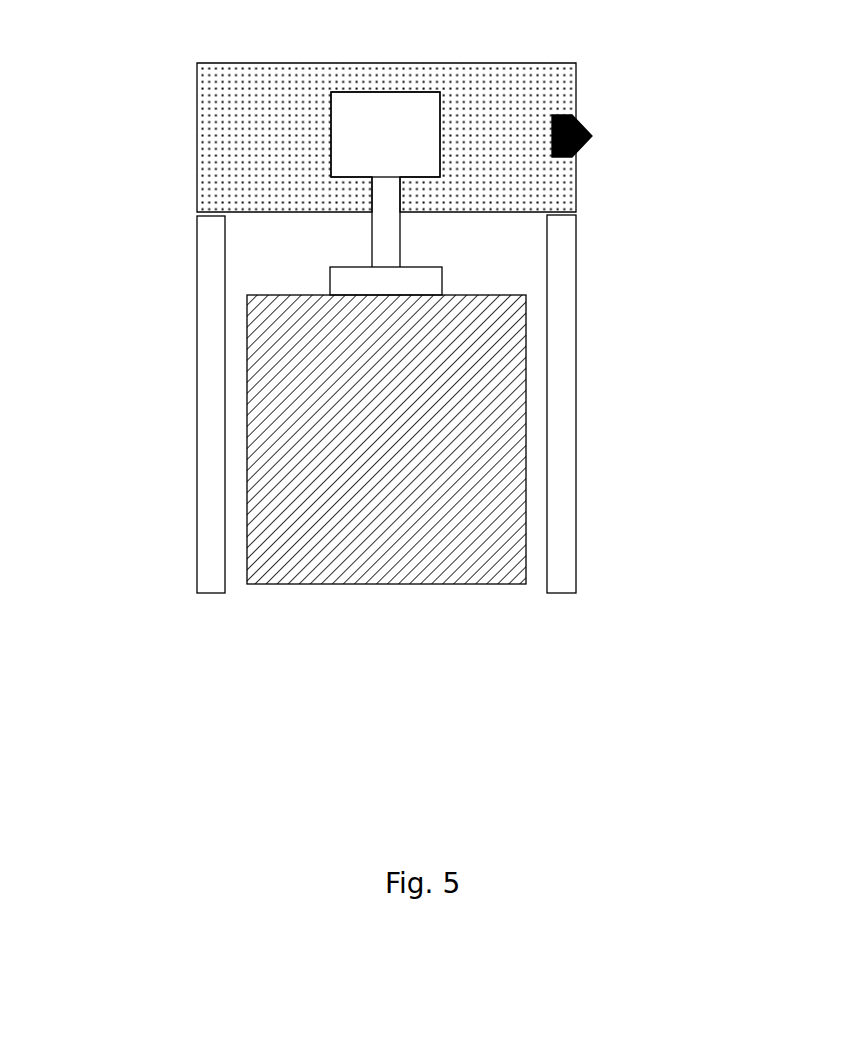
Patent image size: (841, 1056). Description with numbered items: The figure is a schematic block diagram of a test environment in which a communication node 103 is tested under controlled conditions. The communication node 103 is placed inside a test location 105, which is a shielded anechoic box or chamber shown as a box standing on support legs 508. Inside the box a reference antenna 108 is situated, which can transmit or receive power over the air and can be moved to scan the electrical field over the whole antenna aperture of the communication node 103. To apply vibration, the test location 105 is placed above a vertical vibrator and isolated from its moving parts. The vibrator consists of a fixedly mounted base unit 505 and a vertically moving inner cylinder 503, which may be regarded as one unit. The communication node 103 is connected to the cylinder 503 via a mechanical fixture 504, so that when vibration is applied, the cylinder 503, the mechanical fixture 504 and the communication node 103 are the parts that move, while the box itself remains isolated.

The test location 105 is at (230, 96).
The communication node 103 is at (368, 115).
The reference antenna 108 is at (575, 118).
The mechanical fixture 504 is at (387, 211).
The inner cylinder 503 is at (363, 279).
The base unit 505 is at (425, 539).
The support legs 508 is at (197, 440).